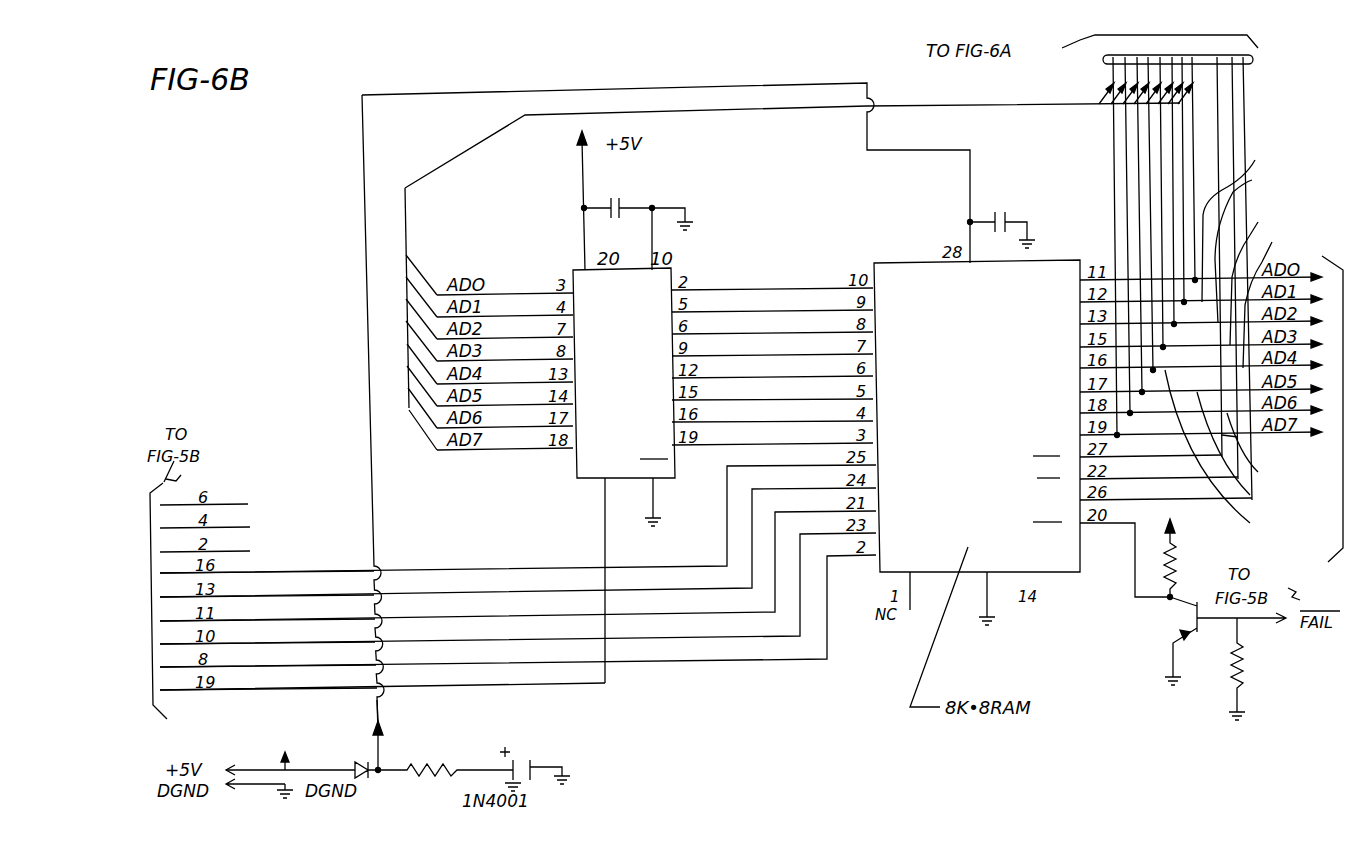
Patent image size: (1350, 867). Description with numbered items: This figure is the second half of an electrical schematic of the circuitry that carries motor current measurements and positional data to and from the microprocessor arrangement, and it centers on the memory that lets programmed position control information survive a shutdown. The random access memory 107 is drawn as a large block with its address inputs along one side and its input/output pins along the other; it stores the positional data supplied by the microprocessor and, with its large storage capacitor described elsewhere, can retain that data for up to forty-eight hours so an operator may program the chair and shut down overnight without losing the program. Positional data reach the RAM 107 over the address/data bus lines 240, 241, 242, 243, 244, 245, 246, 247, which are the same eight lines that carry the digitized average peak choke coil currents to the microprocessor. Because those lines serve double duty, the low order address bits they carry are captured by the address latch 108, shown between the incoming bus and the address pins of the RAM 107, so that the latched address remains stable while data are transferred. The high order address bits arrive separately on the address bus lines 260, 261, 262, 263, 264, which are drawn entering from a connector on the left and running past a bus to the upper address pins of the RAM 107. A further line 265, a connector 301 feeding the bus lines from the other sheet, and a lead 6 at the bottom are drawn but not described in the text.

The 8K×8 RAM 107 is at (878, 261).
The address latch 108 is at (680, 272).
The address/data bus line 240 is at (1255, 160).
The address/data bus line 241 is at (1252, 180).
The address/data bus line 242 is at (1258, 222).
The address/data bus line 243 is at (1272, 242).
The address/data bus line 244 is at (1250, 523).
The address/data bus line 245 is at (1250, 495).
The address/data bus line 246 is at (1258, 472).
The address/data bus line 247 is at (1238, 437).
The address bus line 260 is at (267, 572).
The address bus line 261 is at (267, 597).
The address bus line 262 is at (267, 621).
The address bus line 263 is at (267, 644).
The address bus line 264 is at (267, 667).
The conductor 265 is at (267, 690).
The connector 301 is at (1255, 63).
The conductor 6 is at (373, 728).